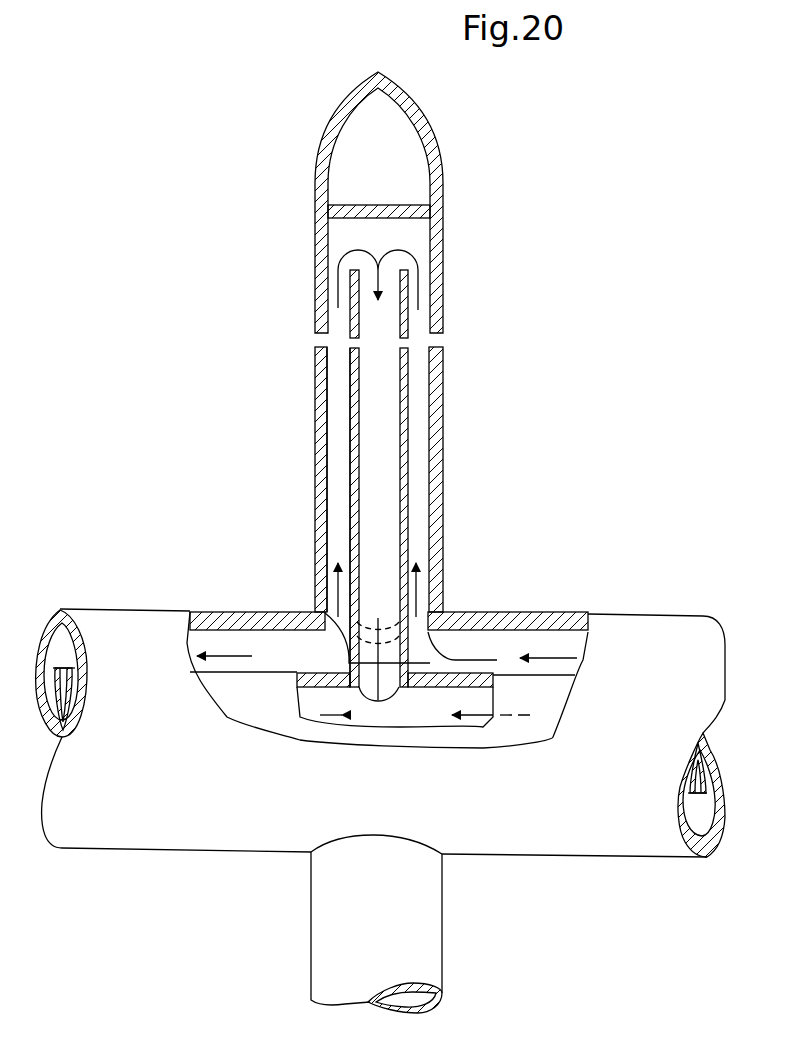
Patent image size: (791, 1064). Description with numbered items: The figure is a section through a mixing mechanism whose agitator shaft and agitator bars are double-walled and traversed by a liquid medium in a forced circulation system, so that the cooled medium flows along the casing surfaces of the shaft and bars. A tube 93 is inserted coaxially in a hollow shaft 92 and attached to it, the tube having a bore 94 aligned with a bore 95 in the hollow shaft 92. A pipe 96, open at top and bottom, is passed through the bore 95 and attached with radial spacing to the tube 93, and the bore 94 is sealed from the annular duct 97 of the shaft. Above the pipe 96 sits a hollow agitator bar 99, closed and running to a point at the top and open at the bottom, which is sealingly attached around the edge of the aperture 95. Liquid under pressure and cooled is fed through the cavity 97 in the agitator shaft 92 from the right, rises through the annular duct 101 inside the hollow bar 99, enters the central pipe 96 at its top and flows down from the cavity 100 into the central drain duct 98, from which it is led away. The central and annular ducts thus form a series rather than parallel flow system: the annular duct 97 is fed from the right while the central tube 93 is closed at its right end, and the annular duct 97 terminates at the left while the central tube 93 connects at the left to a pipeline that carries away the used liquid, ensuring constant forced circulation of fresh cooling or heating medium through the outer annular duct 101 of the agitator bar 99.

The hollow shaft 92 is at (555, 622).
The tube 93 is at (495, 680).
The bore 94 is at (365, 686).
The bore 95 is at (322, 607).
The pipe 96 is at (352, 440).
The annular duct 97 is at (232, 637).
The central drain duct 98 is at (57, 723).
The hollow agitator bar 99 is at (437, 256).
The cavity 100 is at (367, 375).
The annular duct 101 is at (415, 389).